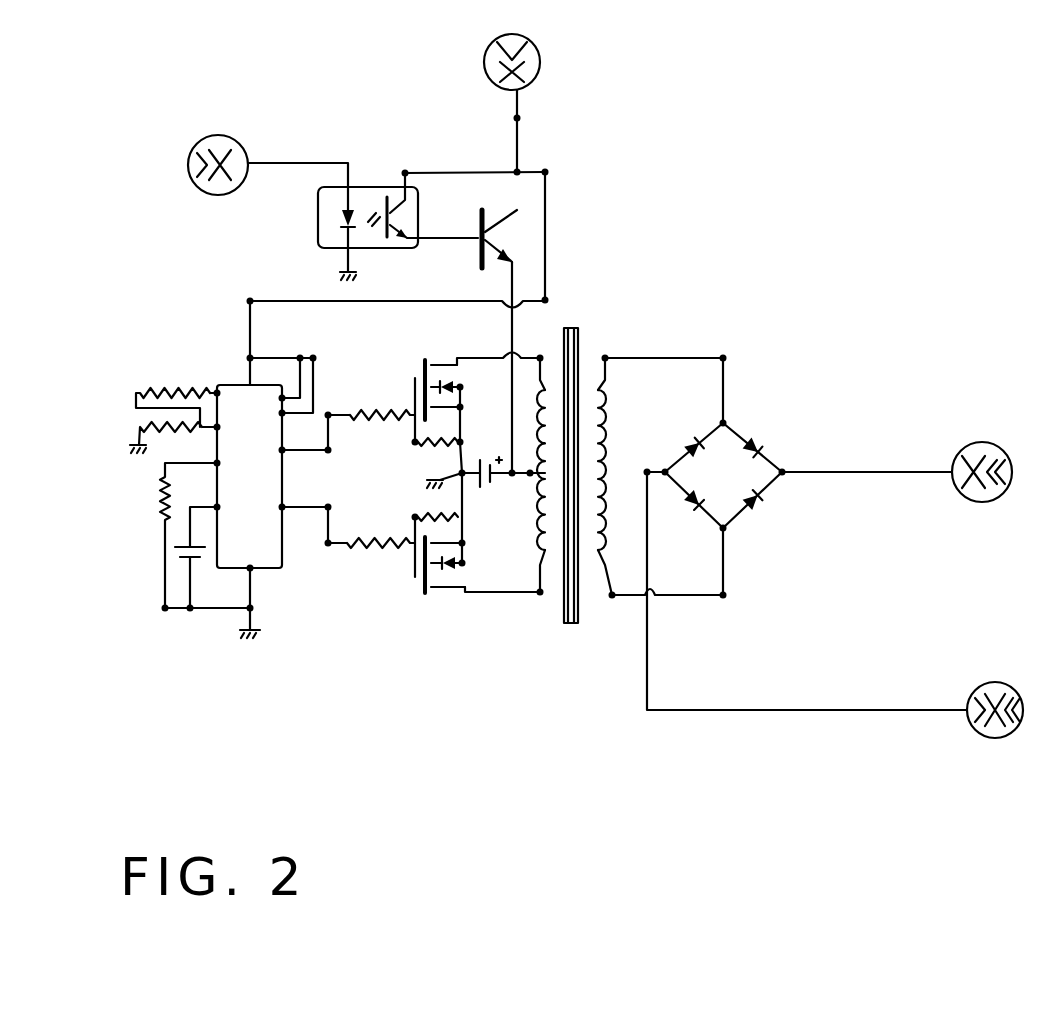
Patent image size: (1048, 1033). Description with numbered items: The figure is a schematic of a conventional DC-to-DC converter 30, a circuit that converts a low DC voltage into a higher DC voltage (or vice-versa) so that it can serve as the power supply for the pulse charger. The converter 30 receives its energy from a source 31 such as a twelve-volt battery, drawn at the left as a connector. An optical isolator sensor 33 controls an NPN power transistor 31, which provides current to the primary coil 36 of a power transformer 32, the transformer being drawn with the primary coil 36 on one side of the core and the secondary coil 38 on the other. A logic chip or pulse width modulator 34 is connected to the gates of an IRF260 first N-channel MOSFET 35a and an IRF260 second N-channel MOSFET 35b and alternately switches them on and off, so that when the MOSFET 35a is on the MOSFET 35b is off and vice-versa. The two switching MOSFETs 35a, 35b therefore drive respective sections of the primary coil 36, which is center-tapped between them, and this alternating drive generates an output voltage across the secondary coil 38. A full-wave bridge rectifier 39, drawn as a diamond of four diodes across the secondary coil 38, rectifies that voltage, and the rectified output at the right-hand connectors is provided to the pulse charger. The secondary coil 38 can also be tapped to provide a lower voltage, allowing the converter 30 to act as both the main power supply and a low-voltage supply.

The DC-to-DC converter 30 is at (377, 603).
The source / NPN power transistor 31 is at (526, 39).
The power transformer 32 is at (553, 588).
The optical isolator sensor 33 is at (372, 194).
The pulse width modulator 34 is at (260, 477).
The first N-channel MOSFET 35a is at (413, 365).
The second N-channel MOSFET 35b is at (422, 592).
The primary coil 36 is at (547, 390).
The secondary coil 38 is at (603, 405).
The full-wave bridge rectifier 39 is at (720, 455).